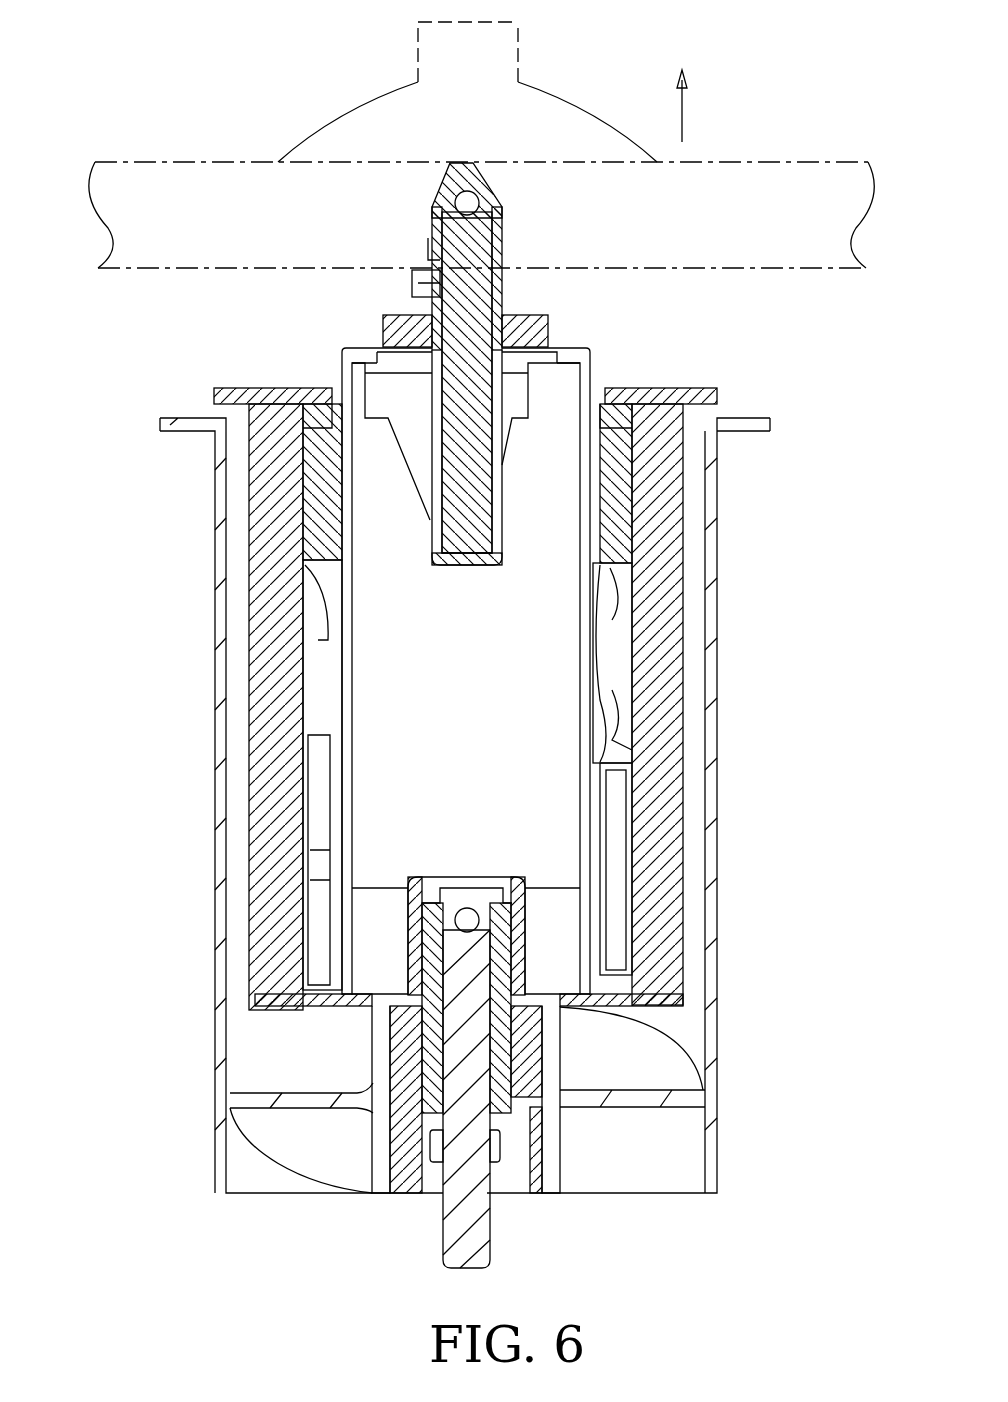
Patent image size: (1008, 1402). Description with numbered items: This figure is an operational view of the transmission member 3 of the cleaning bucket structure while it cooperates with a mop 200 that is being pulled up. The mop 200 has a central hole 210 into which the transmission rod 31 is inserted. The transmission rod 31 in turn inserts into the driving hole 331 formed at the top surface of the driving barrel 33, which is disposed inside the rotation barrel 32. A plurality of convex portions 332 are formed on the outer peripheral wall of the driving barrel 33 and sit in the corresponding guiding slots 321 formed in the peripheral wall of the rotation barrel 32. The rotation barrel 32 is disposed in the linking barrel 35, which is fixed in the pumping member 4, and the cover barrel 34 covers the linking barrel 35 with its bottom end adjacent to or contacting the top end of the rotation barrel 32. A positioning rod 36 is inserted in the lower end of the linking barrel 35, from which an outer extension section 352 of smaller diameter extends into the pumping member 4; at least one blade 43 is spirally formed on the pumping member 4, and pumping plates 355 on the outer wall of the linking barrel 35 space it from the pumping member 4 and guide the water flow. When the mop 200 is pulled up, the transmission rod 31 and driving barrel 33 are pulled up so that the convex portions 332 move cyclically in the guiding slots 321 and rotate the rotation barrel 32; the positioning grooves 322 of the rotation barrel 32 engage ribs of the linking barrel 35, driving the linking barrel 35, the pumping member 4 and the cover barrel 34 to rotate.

The mop 200 is at (345, 108).
The central hole 210 is at (428, 178).
The transmission member 3 is at (512, 233).
The transmission rod 31 is at (437, 360).
The driving barrel 33 is at (600, 358).
The driving hole 331 is at (433, 432).
The cover barrel 34 is at (205, 392).
The convex portions 332 is at (316, 856).
The linking barrel 35 is at (680, 452).
The pumping plates 355 is at (663, 528).
The rotation barrel 32 is at (637, 597).
The guiding slots 321 is at (603, 650).
The positioning grooves 322 is at (622, 918).
The pumping member 4 is at (218, 657).
The blade 43 is at (623, 1050).
The positioning rod 36 is at (463, 1108).
The outer extension section 352 is at (520, 1077).